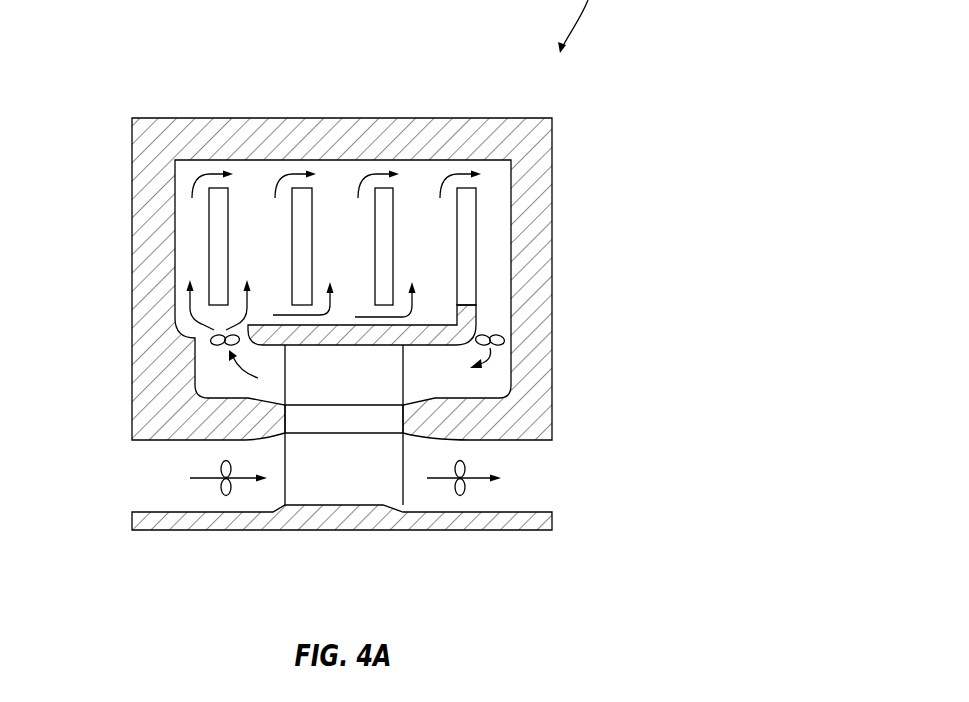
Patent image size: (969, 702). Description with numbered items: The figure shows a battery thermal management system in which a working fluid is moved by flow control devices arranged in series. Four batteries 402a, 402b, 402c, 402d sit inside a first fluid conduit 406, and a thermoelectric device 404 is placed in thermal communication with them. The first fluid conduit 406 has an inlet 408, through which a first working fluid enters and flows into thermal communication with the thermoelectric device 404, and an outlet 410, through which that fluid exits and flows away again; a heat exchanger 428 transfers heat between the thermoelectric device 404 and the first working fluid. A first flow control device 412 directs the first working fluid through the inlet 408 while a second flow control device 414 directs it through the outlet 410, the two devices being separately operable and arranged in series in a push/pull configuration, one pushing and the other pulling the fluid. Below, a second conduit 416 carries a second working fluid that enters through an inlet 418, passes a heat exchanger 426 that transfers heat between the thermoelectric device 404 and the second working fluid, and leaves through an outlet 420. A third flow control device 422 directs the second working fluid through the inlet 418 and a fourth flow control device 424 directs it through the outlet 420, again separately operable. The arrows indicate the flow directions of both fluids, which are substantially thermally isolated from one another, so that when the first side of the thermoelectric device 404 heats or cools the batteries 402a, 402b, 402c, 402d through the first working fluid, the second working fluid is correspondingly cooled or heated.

The battery 402a is at (218, 207).
The battery 402b is at (301, 207).
The battery 402c is at (384, 207).
The battery 402d is at (466, 207).
The thermoelectric device 404 is at (370, 422).
The first fluid conduit 406 is at (215, 372).
The inlet 408 is at (492, 312).
The outlet 410 is at (215, 325).
The first flow control device 412 is at (505, 333).
The second flow control device 414 is at (207, 333).
The second conduit 416 is at (175, 497).
The inlet 418 is at (150, 502).
The outlet 420 is at (538, 477).
The third flow control device 422 is at (226, 496).
The fourth flow control device 424 is at (460, 496).
The heat exchanger 426 is at (403, 482).
The heat exchanger 428 is at (285, 385).